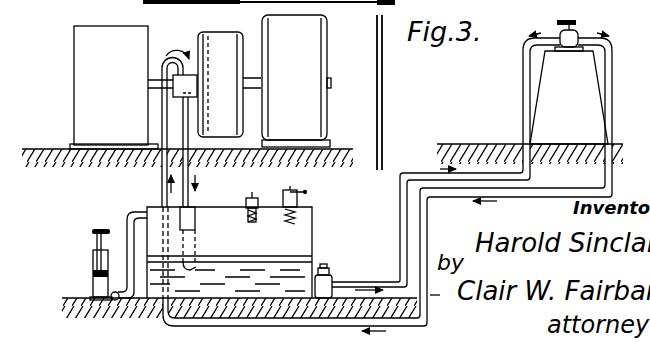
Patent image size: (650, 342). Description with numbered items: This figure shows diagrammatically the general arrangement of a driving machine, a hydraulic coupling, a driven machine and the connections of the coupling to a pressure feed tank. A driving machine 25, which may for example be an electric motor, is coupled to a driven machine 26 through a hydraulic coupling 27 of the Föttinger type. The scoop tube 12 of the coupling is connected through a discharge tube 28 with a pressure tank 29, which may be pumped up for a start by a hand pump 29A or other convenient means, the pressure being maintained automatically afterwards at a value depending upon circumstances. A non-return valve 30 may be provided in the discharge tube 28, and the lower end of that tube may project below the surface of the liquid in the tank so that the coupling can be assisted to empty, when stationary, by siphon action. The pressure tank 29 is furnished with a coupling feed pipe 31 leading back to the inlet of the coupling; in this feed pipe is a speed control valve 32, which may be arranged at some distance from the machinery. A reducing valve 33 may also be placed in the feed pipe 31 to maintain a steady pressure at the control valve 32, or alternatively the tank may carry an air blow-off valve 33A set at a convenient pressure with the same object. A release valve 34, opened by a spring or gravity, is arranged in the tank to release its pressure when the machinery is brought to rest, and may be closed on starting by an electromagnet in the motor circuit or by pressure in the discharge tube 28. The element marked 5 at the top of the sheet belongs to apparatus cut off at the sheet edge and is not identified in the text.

The upper apparatus (cut off at sheet edge) 5 is at (269, 11).
The scoop tube 12 is at (206, 108).
The driving machine 25 is at (296, 81).
The driven machine 26 is at (114, 87).
The hydraulic coupling 27 is at (229, 84).
The discharge tube 28 is at (190, 181).
The pressure tank 29 is at (312, 224).
The hand pump 29A is at (93, 263).
The non-return valve 30 is at (194, 209).
The coupling feed pipe 31 is at (163, 185).
The speed control valve 32 is at (573, 32).
The reducing valve 33 is at (332, 273).
The air blow-off valve 33A is at (260, 198).
The release valve 34 is at (296, 191).